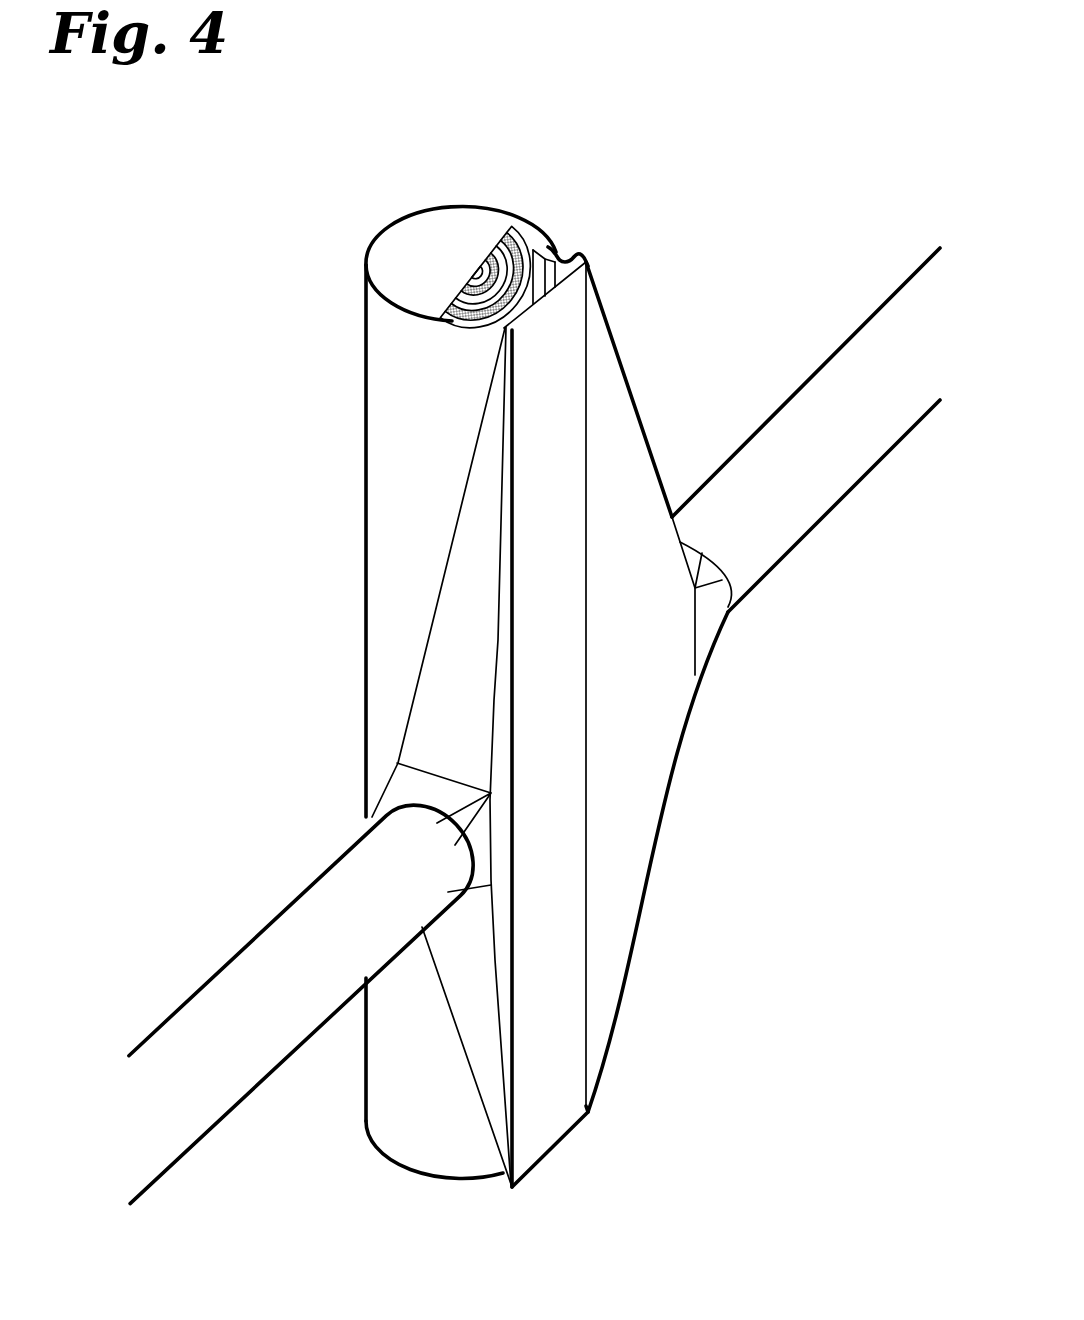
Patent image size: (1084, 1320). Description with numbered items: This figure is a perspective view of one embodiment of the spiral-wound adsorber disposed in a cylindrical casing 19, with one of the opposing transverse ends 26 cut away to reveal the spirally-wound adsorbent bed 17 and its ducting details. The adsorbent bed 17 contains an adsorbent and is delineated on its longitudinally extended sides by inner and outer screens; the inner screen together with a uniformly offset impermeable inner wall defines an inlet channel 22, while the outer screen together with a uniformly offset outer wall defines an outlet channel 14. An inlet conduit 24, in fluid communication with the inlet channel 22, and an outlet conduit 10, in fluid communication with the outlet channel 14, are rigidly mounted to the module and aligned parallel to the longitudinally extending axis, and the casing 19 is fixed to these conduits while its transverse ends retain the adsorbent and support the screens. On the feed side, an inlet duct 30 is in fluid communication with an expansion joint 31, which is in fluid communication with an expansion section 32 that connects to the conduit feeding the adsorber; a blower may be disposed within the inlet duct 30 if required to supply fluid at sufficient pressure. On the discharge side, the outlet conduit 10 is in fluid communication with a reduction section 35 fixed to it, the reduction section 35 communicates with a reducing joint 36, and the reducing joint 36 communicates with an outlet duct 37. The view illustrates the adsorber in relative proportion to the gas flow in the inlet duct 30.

The outlet conduit 10 is at (589, 277).
The outlet channel 14 is at (537, 228).
The spirally-wound adsorbent bed 17 is at (519, 229).
The casing 19 is at (365, 454).
The inlet channel 22 is at (552, 250).
The inlet conduit 24 is at (533, 310).
The transverse end 26 is at (417, 238).
The inlet duct 30 is at (285, 900).
The expansion joint 31 is at (377, 798).
The expansion section 32 is at (410, 707).
The reduction section 35 is at (658, 825).
The reducing joint 36 is at (706, 657).
The outlet duct 37 is at (803, 547).